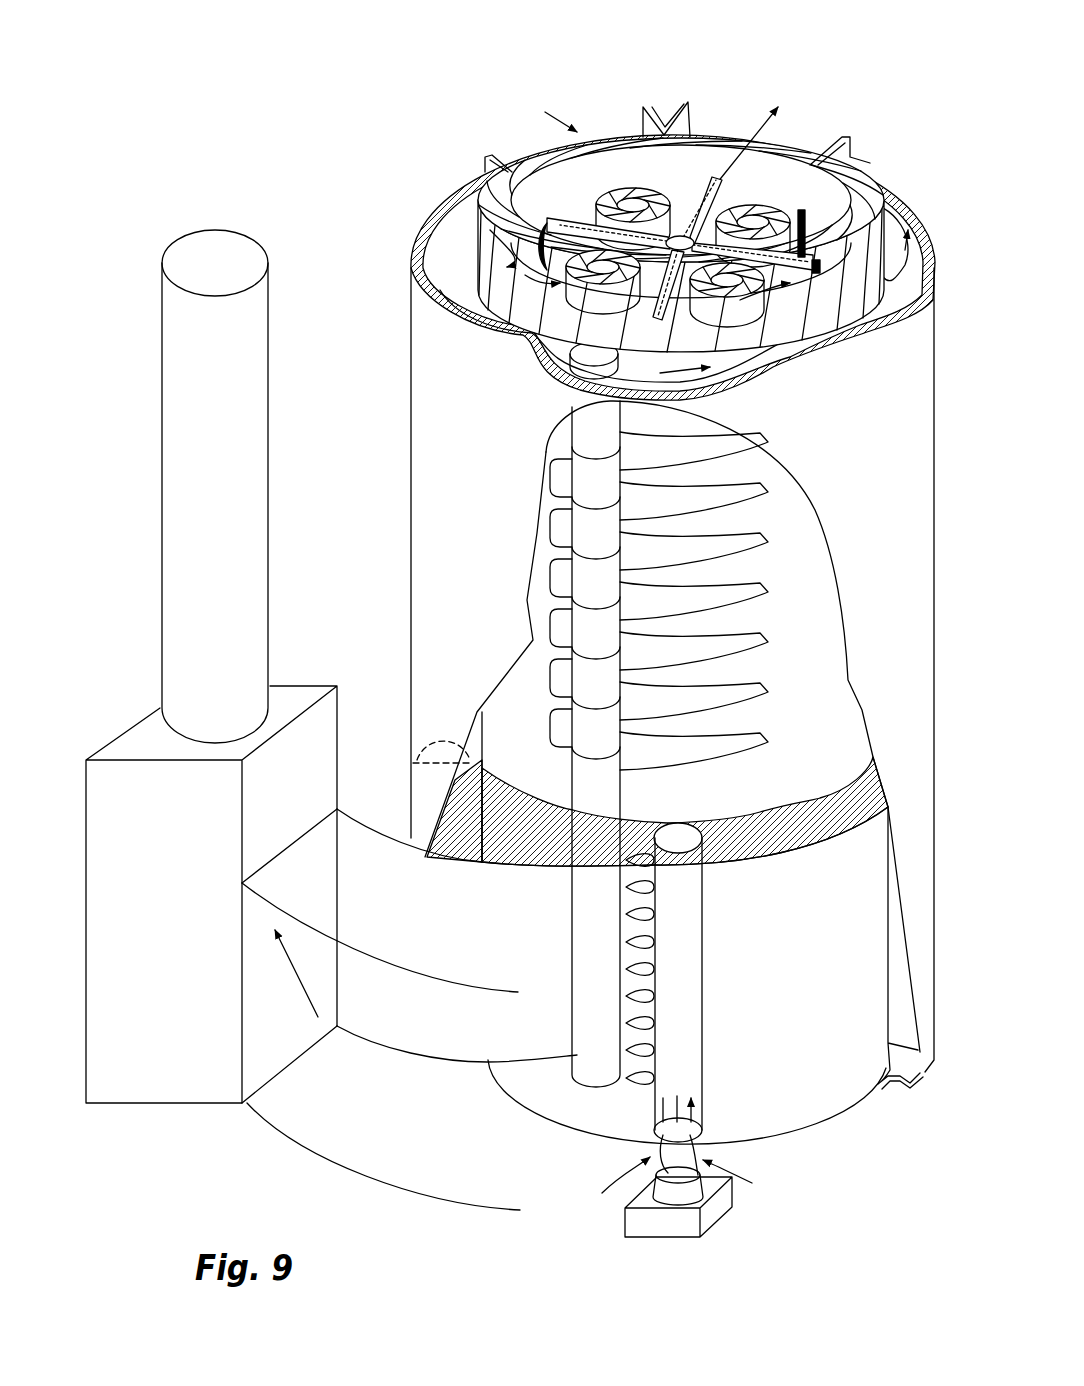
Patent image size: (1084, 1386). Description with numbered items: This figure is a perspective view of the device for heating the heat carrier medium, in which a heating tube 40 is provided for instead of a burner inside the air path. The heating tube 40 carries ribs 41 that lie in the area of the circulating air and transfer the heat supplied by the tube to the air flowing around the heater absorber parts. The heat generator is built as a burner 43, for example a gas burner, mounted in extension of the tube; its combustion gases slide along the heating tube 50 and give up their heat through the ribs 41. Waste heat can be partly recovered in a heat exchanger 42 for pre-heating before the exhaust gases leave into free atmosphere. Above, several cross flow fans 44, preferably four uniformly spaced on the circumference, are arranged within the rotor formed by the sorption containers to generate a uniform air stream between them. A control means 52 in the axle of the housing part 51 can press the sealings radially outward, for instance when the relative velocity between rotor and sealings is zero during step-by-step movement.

The heating tube 40 is at (572, 356).
The ribs 41 is at (553, 535).
The heat exchanger 42 is at (292, 695).
The burner 43 is at (720, 1207).
The cross flow fans 44 is at (752, 218).
The heating tube 50 is at (573, 173).
The housing part 51 is at (715, 175).
The control means 52 is at (683, 238).